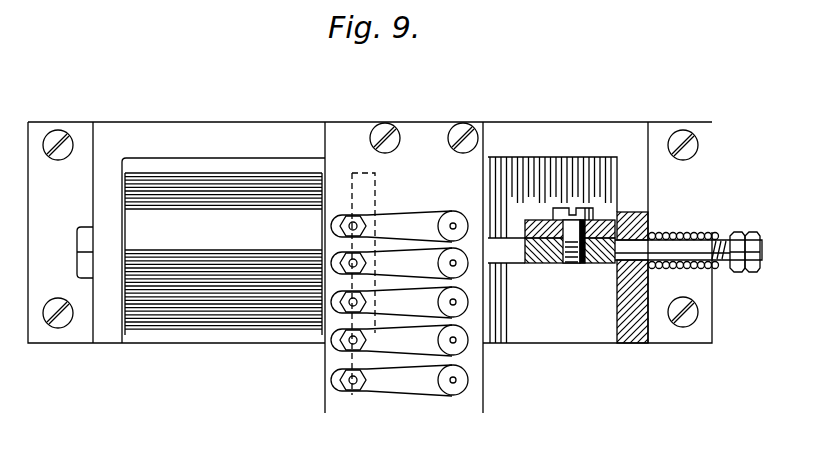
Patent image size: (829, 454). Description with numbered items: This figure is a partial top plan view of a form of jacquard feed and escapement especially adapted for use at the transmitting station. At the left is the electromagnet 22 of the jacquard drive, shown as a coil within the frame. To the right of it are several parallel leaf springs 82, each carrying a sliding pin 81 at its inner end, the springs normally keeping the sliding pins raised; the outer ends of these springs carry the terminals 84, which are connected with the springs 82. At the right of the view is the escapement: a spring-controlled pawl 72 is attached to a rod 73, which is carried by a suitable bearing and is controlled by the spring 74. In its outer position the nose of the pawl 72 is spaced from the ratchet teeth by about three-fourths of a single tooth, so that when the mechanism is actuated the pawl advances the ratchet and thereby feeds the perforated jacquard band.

The electromagnet 22 is at (212, 192).
The spring-controlled pawl 72 is at (538, 220).
The rod 73 is at (514, 256).
The spring 74 is at (700, 236).
The sliding pin 81 is at (364, 221).
The leaf spring 82 is at (419, 230).
The terminals 84 is at (463, 388).